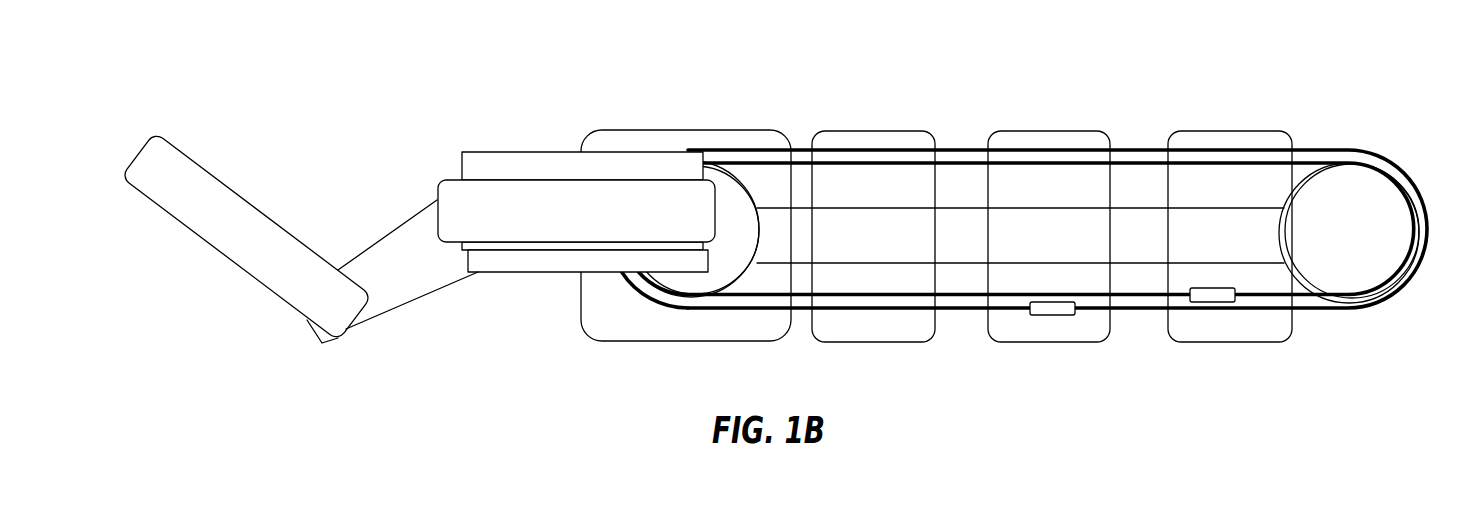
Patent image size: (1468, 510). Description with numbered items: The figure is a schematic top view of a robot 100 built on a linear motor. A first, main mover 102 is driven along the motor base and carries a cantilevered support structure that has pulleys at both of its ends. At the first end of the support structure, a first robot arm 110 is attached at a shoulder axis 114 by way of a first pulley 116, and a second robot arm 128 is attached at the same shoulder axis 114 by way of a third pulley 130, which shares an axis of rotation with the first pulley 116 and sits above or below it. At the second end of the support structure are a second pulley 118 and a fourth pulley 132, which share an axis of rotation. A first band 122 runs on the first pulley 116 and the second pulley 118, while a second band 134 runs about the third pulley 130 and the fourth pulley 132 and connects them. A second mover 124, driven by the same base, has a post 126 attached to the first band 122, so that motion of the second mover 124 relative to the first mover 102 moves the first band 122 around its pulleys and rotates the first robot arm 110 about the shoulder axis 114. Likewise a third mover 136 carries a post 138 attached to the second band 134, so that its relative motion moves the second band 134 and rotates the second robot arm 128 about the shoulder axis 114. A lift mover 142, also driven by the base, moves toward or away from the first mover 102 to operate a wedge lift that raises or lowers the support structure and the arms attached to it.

The robot 100 is at (1359, 54).
The first mover 102 is at (630, 342).
The first robot arm 110 is at (400, 308).
The shoulder axis 114 is at (672, 212).
The first pulley 116 is at (717, 302).
The second pulley 118 is at (1380, 307).
The first band 122 is at (1315, 308).
The second mover 124 is at (1063, 131).
The post 126 is at (1052, 315).
The second robot arm 128 is at (483, 212).
The third pulley 130 is at (747, 175).
The fourth pulley 132 is at (1383, 150).
The second band 134 is at (1315, 148).
The third mover 136 is at (1245, 131).
The post 138 is at (1215, 302).
The lift mover 142 is at (888, 131).